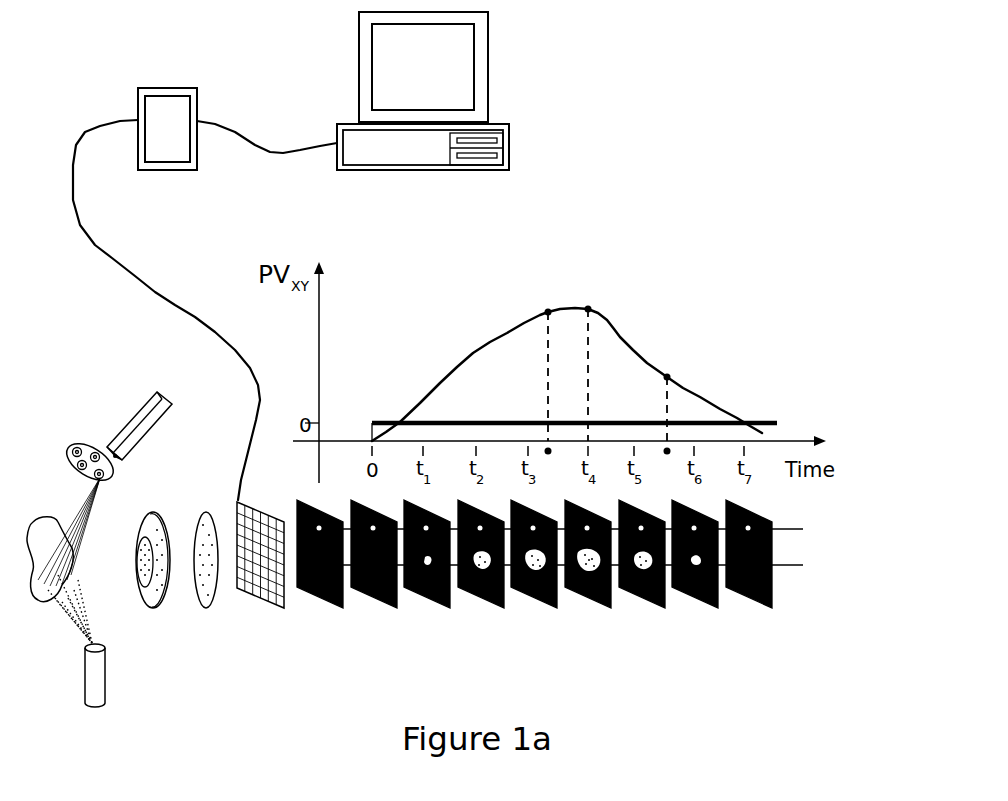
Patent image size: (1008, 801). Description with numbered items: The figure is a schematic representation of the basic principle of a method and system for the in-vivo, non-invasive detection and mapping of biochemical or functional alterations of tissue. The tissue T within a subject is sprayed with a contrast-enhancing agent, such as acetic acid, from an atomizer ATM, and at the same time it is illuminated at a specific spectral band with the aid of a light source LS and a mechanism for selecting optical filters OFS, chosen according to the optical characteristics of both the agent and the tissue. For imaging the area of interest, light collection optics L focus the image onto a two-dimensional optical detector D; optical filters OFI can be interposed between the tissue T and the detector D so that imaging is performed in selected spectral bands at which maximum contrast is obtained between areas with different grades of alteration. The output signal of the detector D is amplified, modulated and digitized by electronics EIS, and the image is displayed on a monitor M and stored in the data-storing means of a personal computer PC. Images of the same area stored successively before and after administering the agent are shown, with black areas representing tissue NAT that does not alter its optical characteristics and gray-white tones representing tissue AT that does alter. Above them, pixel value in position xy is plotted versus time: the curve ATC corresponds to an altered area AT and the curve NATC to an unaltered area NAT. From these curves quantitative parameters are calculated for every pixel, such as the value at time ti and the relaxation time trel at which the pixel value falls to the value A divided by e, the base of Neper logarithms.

The electronics EIS is at (138, 95).
The monitor M is at (483, 100).
The personal computer PC is at (510, 143).
The light source LS is at (140, 410).
The mechanism for selecting optical filters OFS is at (75, 432).
The tissue T is at (38, 518).
The atomizer ATM is at (100, 682).
The light collection optics L is at (150, 516).
The optical filters OFI is at (205, 516).
The two-dimensional optical detector D is at (272, 522).
The ATC curve ATC is at (466, 357).
The NATC curve NATC is at (778, 423).
The value A is at (588, 308).
The time ti is at (548, 454).
The relaxation time trel is at (667, 454).
The non-altering tissue areas NAT is at (584, 530).
The altering tissue areas AT is at (575, 565).